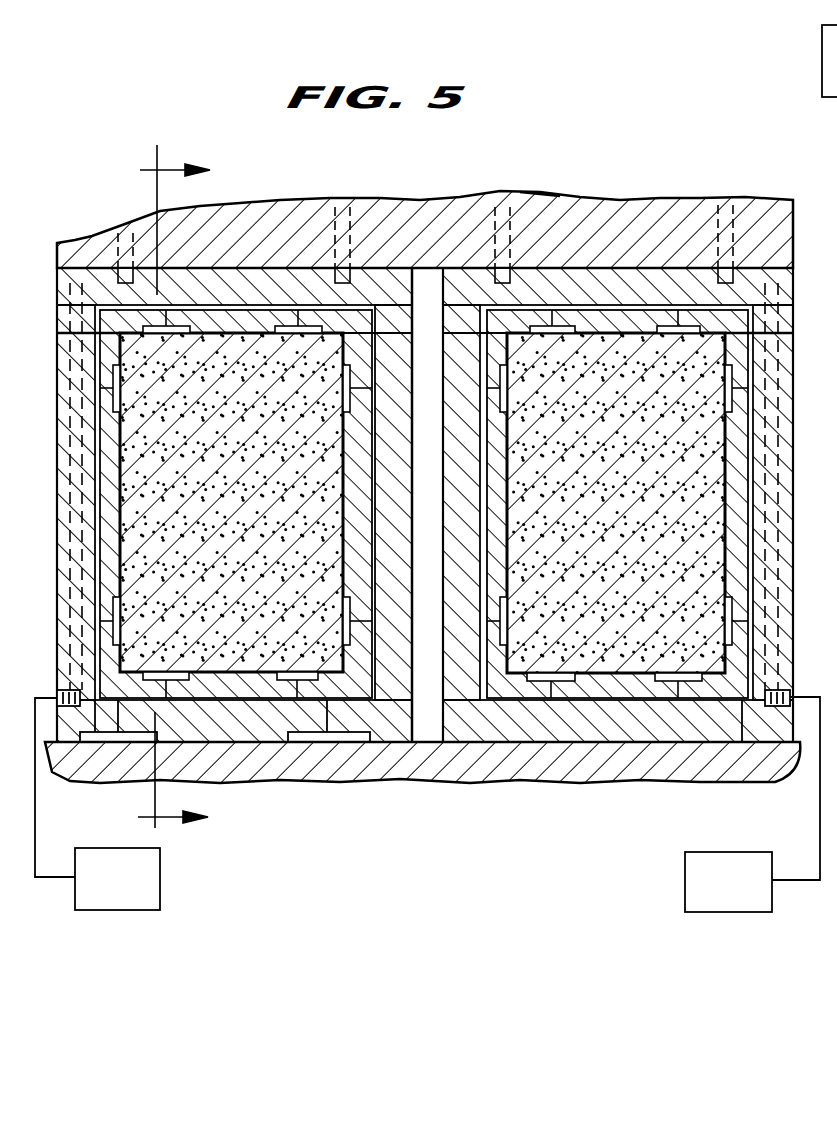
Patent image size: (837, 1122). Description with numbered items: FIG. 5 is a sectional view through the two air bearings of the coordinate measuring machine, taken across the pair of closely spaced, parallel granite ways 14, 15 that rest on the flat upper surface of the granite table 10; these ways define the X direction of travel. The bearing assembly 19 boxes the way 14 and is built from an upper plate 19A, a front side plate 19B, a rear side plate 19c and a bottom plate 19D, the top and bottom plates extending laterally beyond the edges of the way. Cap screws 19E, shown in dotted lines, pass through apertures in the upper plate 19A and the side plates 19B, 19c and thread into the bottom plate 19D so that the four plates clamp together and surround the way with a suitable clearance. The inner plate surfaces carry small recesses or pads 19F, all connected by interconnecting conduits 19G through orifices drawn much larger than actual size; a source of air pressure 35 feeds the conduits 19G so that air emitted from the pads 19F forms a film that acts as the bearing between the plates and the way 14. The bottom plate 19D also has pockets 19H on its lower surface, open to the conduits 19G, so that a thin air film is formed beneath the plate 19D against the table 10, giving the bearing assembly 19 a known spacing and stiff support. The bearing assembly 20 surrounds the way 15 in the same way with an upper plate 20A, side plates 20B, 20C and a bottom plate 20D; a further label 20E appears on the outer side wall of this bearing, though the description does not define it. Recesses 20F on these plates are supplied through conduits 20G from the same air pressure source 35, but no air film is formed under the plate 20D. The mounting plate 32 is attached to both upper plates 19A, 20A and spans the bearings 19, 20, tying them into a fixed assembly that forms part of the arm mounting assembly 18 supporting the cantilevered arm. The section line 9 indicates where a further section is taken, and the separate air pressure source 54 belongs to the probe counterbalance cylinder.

The table 10 is at (558, 785).
The way 14 is at (250, 665).
The way 15 is at (705, 567).
The arm mounting assembly 18 is at (285, 212).
The bearing assembly 19 is at (256, 493).
The upper plate 19A is at (195, 275).
The front side plate 19B is at (65, 343).
The rear side plate 19c is at (400, 655).
The bottom plate 19D is at (392, 733).
The cap screws 19E is at (80, 565).
The recesses or pads 19F is at (343, 385).
The conduits 19G is at (100, 490).
The pockets 19H is at (97, 745).
The bearing assembly 20 is at (640, 489).
The upper plate 20A is at (553, 283).
The side plate 20B is at (503, 432).
The side plate 20C is at (778, 322).
The bottom plate 20D is at (628, 690).
The outer side wall of right mold body 20E is at (793, 500).
The recesses 20F is at (553, 676).
The conduits 20G is at (487, 528).
The mounting plate 32 is at (540, 197).
The source of air pressure 35 is at (160, 897).
The air pressure source 54 is at (822, 36).
The section line 9- 9 is at (155, 490).